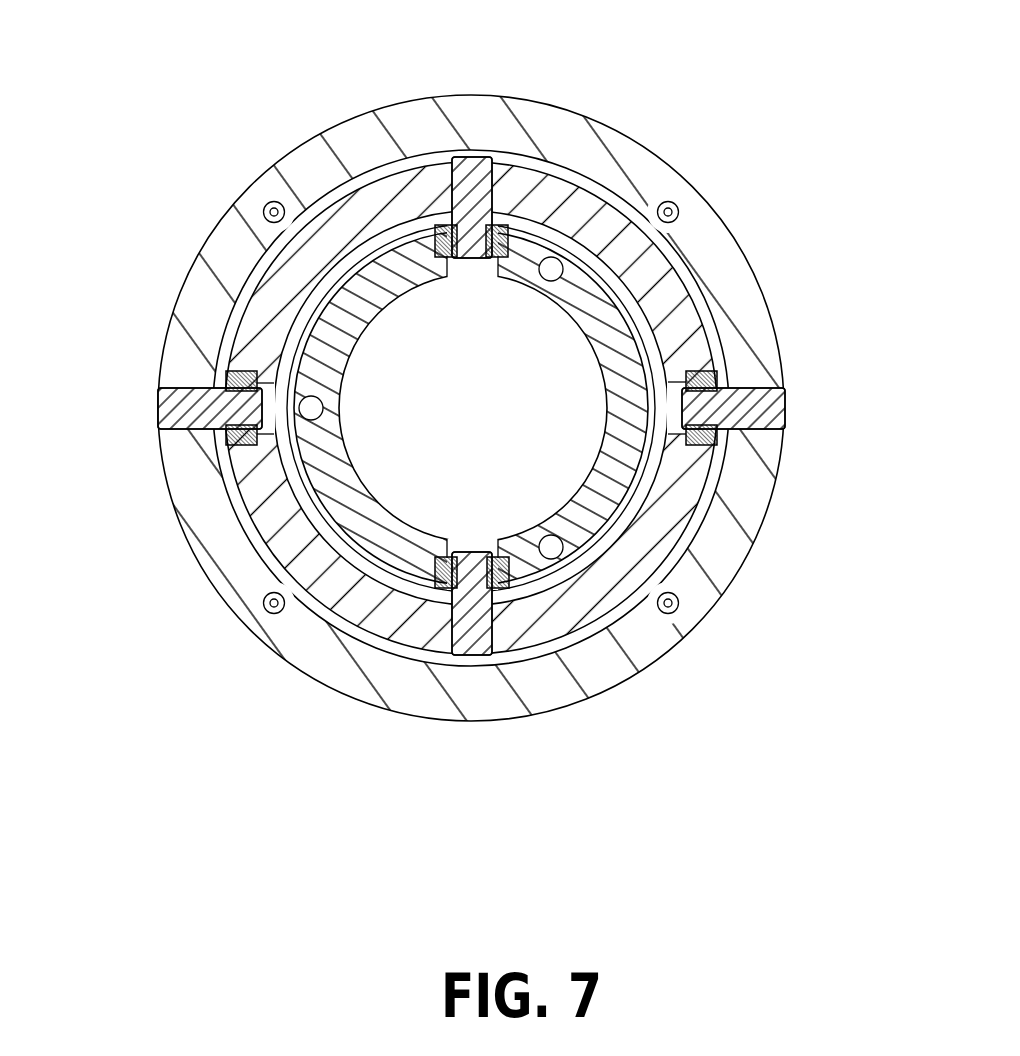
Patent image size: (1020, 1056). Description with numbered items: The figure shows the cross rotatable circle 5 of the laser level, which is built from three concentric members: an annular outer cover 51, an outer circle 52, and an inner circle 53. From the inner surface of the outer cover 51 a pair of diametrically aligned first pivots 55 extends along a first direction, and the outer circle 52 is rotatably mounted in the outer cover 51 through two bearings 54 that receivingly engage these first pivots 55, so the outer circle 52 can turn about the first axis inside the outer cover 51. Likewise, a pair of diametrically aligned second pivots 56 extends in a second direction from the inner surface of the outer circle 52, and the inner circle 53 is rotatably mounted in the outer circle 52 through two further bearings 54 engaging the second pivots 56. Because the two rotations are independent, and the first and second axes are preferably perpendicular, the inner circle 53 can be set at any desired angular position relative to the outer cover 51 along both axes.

The cross rotatable circle 5 is at (473, 418).
The annular outer cover 51 is at (488, 123).
The outer circle 52 is at (340, 222).
The inner circle 53 is at (612, 325).
The bearings 54 is at (436, 232).
The first pivots 55 is at (195, 408).
The second pivots 56 is at (474, 186).